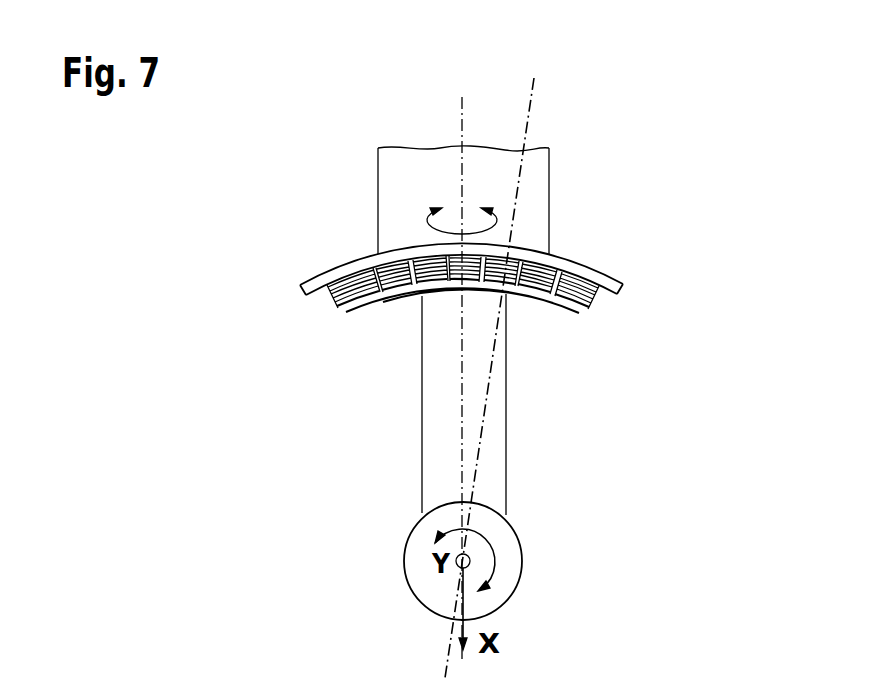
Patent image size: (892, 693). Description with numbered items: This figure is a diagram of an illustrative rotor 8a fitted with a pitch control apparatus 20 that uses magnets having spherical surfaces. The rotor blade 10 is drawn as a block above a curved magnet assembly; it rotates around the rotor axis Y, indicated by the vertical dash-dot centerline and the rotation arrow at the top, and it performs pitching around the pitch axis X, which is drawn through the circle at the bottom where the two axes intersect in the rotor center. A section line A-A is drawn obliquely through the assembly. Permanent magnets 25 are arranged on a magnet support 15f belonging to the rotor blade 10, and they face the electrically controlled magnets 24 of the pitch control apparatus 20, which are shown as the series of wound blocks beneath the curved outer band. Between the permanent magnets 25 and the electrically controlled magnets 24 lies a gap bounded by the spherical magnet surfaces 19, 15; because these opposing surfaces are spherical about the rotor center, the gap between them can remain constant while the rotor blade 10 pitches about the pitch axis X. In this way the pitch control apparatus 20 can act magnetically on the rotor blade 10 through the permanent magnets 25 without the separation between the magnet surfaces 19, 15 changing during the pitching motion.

The rotor 8a is at (600, 182).
The rotor blade 10 is at (405, 171).
The pitch control apparatus 20 is at (307, 262).
The electrically controlled magnets 24 is at (333, 297).
The spherical magnet surface 19 is at (387, 310).
The magnet support 15f is at (413, 300).
The permanent magnets 25 is at (553, 300).
The spherical magnet surface 15 is at (572, 307).
The section line A-A is at (515, 378).